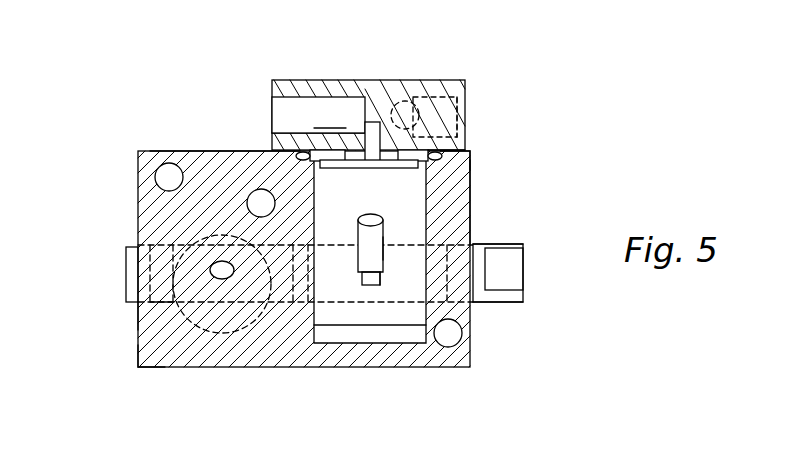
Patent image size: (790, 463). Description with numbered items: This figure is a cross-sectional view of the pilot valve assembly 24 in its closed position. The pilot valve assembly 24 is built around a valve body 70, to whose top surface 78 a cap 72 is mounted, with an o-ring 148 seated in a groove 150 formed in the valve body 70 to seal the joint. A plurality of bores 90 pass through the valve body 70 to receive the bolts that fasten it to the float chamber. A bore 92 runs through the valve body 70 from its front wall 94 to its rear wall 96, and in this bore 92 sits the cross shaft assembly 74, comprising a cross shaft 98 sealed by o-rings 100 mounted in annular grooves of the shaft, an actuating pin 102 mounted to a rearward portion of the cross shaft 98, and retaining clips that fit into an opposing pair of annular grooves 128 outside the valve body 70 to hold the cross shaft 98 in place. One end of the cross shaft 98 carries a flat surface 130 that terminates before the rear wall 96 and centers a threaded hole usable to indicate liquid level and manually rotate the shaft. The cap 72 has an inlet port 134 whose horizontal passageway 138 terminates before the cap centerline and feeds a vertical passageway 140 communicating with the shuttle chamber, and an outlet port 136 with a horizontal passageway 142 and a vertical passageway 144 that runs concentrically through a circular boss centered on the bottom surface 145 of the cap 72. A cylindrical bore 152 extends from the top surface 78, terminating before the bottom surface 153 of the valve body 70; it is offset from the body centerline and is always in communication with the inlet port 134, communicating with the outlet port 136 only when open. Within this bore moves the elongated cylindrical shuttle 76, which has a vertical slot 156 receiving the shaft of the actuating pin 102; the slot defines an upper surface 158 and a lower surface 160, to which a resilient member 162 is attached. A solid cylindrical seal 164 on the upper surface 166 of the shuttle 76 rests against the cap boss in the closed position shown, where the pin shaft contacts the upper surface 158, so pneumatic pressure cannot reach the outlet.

The pilot valve assembly 24 is at (555, 215).
The valve body 70 is at (458, 357).
The cap 72 is at (420, 97).
The cross shaft assembly 74 is at (108, 298).
The shuttle 76 is at (472, 160).
The top surface 78 is at (205, 150).
The bores 90 is at (250, 193).
The bore 92 is at (132, 250).
The front wall 94 is at (140, 367).
The rear wall 96 is at (470, 182).
The cross shaft 98 is at (518, 302).
The o-rings 100 is at (470, 240).
The actuating pin 102 is at (384, 228).
The annular grooves 128 is at (475, 250).
The flat surface 130 is at (515, 262).
The inlet port 134 is at (457, 108).
The outlet port 136 is at (318, 115).
The horizontal passageway 138 is at (458, 100).
The vertical passageway 140 is at (413, 108).
The horizontal passageway 142 is at (275, 82).
The vertical passageway 144 is at (374, 142).
The bottom surface 145 is at (473, 152).
The o-ring 148 is at (275, 140).
The groove 150 is at (296, 154).
The cylindrical bore 152 is at (330, 343).
The bottom surface 153 is at (392, 343).
The vertical slot 156 is at (382, 237).
The upper surface 158 is at (340, 168).
The lower surface 160 is at (362, 272).
The resilient member 162 is at (380, 274).
The solid cylindrical seal 164 is at (443, 156).
The upper surface 166 is at (362, 218).